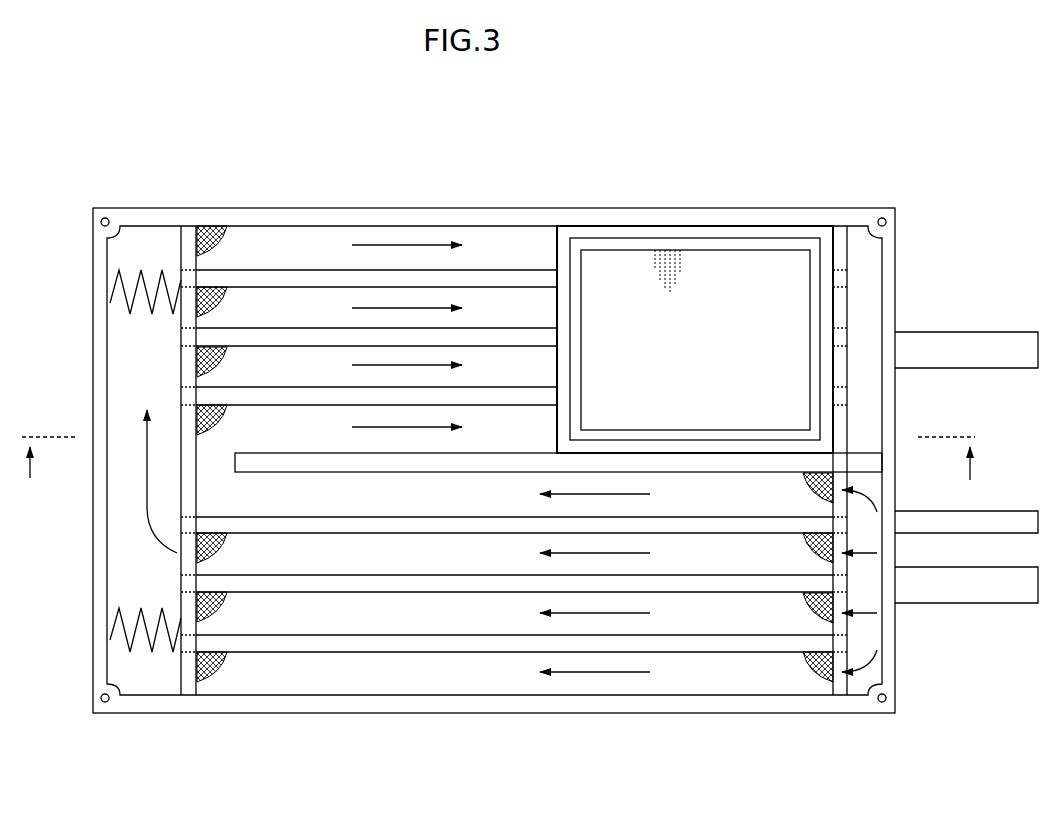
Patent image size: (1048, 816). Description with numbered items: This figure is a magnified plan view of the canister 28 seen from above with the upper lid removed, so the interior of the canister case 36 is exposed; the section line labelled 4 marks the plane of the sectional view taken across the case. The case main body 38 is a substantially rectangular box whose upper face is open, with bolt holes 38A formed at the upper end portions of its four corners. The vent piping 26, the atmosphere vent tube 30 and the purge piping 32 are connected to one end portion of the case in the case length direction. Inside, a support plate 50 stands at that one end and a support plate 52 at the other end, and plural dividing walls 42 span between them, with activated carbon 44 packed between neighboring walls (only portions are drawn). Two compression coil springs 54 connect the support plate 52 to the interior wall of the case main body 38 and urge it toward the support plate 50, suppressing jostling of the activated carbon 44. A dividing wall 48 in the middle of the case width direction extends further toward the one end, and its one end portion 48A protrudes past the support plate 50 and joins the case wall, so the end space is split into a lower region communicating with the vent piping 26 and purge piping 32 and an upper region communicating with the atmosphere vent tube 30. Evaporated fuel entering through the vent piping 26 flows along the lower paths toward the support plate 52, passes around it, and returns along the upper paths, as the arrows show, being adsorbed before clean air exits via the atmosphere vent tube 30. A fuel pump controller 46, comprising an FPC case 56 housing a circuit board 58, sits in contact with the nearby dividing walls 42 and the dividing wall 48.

The canister 28 is at (607, 143).
The case main body 38 is at (778, 206).
The bolt holes 38A is at (105, 218).
The compression coil springs 54 is at (147, 270).
The support plate 52 is at (177, 366).
The dividing walls 42 is at (301, 387).
The dividing wall 48 is at (247, 380).
The activated carbon 44 is at (225, 290).
The canister case 36 is at (510, 185).
The FPC case 56 is at (557, 257).
The fuel pump controller 46 is at (670, 221).
The circuit board 58 is at (734, 400).
The one end portion of the dividing wall 48A is at (868, 452).
The support plate 50 is at (852, 290).
The atmosphere vent tube 30 is at (990, 332).
The purge piping 32 is at (997, 511).
The vent piping 26 is at (990, 603).
The section line 4 is at (500, 471).